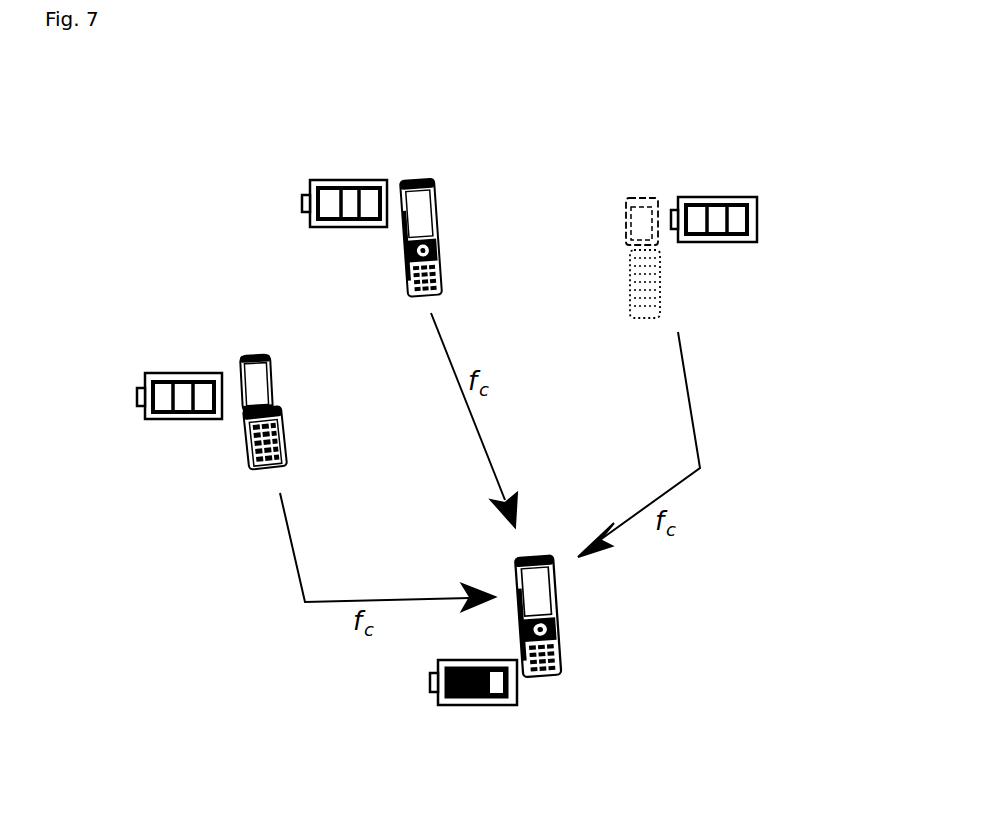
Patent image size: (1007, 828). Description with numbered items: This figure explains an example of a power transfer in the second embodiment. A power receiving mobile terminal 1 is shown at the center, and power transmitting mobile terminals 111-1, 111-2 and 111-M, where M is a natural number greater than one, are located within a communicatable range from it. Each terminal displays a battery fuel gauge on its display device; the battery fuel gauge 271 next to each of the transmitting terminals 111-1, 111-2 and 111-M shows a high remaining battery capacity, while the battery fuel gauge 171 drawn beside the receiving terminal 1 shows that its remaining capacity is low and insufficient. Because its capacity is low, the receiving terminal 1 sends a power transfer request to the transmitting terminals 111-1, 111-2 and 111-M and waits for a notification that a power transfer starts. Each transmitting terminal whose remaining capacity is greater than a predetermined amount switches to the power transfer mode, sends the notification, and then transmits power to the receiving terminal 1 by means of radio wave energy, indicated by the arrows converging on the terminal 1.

The power receiving mobile terminal 1 is at (553, 620).
The power transmitting mobile terminal 111-1 is at (243, 451).
The power transmitting mobile terminal 111-2 is at (418, 180).
The power transmitting mobile terminal 111-M is at (640, 198).
The battery remaining capacity indicator of terminal 1 171 is at (478, 706).
The battery fuel gauge 271 is at (302, 203).